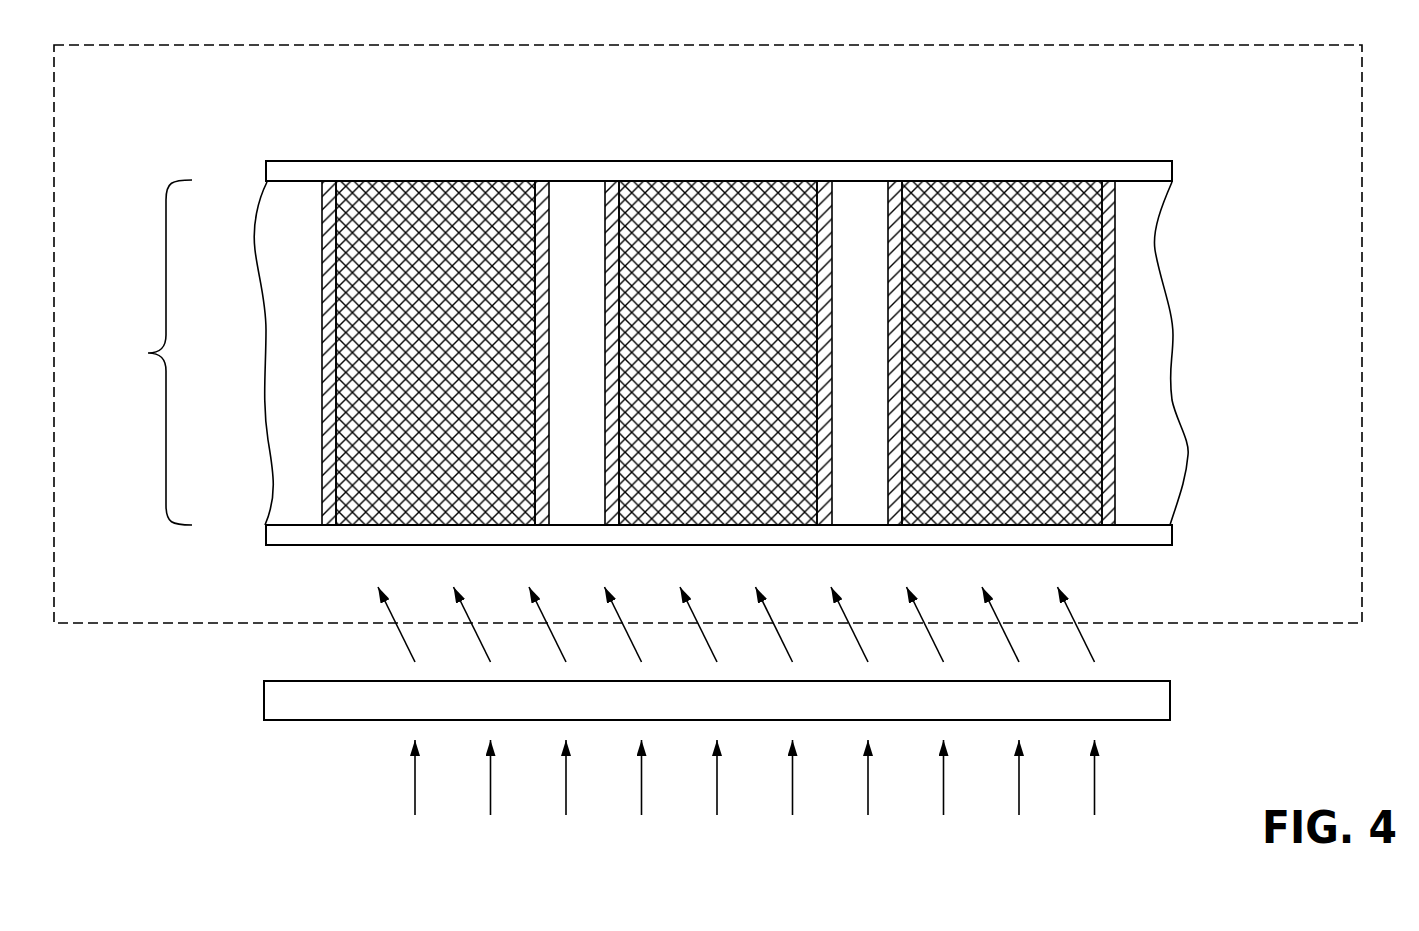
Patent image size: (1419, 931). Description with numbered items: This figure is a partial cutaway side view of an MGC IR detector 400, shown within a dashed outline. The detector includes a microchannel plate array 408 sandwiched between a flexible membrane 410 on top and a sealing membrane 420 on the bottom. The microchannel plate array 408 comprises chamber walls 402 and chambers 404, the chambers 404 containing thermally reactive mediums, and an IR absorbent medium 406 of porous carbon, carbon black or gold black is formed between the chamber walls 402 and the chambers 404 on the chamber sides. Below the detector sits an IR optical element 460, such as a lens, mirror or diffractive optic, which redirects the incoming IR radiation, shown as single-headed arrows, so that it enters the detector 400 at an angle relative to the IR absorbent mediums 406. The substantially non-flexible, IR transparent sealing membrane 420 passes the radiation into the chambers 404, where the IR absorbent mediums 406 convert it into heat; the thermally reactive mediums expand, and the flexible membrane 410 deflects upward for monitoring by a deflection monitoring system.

The MGC IR detector 400 is at (152, 116).
The chamber walls 402 is at (577, 310).
The chambers 404 is at (432, 298).
The IR absorbent medium 406 is at (329, 188).
The microchannel plate array 408 is at (150, 352).
The flexible membrane 410 is at (1156, 172).
The sealing membrane 420 is at (1142, 537).
The IR optical element 460 is at (1147, 701).